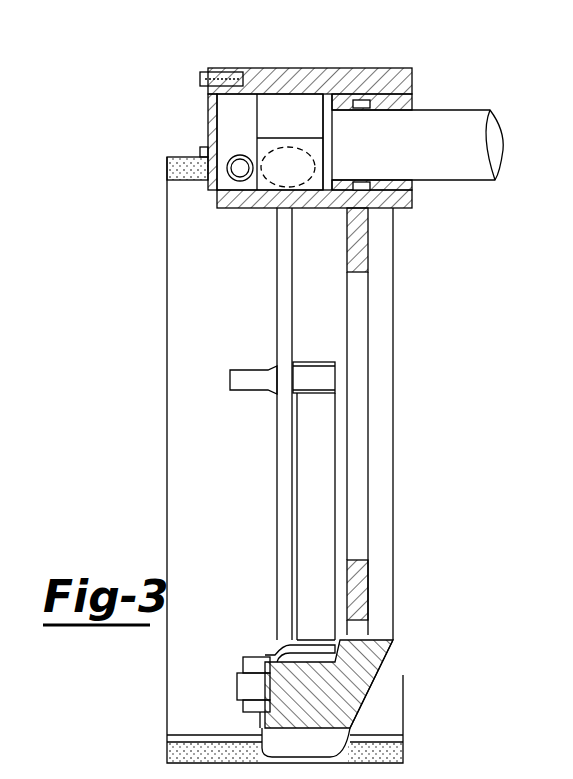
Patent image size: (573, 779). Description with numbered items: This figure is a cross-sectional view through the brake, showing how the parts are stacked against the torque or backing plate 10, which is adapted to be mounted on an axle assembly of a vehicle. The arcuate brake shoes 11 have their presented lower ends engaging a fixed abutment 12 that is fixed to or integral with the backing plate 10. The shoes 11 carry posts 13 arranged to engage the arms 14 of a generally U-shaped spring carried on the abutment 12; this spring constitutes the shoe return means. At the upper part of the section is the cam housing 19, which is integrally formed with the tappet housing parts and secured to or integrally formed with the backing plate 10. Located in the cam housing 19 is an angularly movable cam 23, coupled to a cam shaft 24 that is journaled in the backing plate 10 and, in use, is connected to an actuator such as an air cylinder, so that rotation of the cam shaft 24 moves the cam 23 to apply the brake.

The backing plate 10 is at (360, 585).
The brake shoes 11 is at (177, 297).
The fixed abutment 12 is at (330, 692).
The posts 13 is at (323, 380).
The arms 14 is at (316, 463).
The cam housing 19 is at (292, 80).
The cam 23 is at (273, 103).
The cam shaft 24 is at (447, 167).